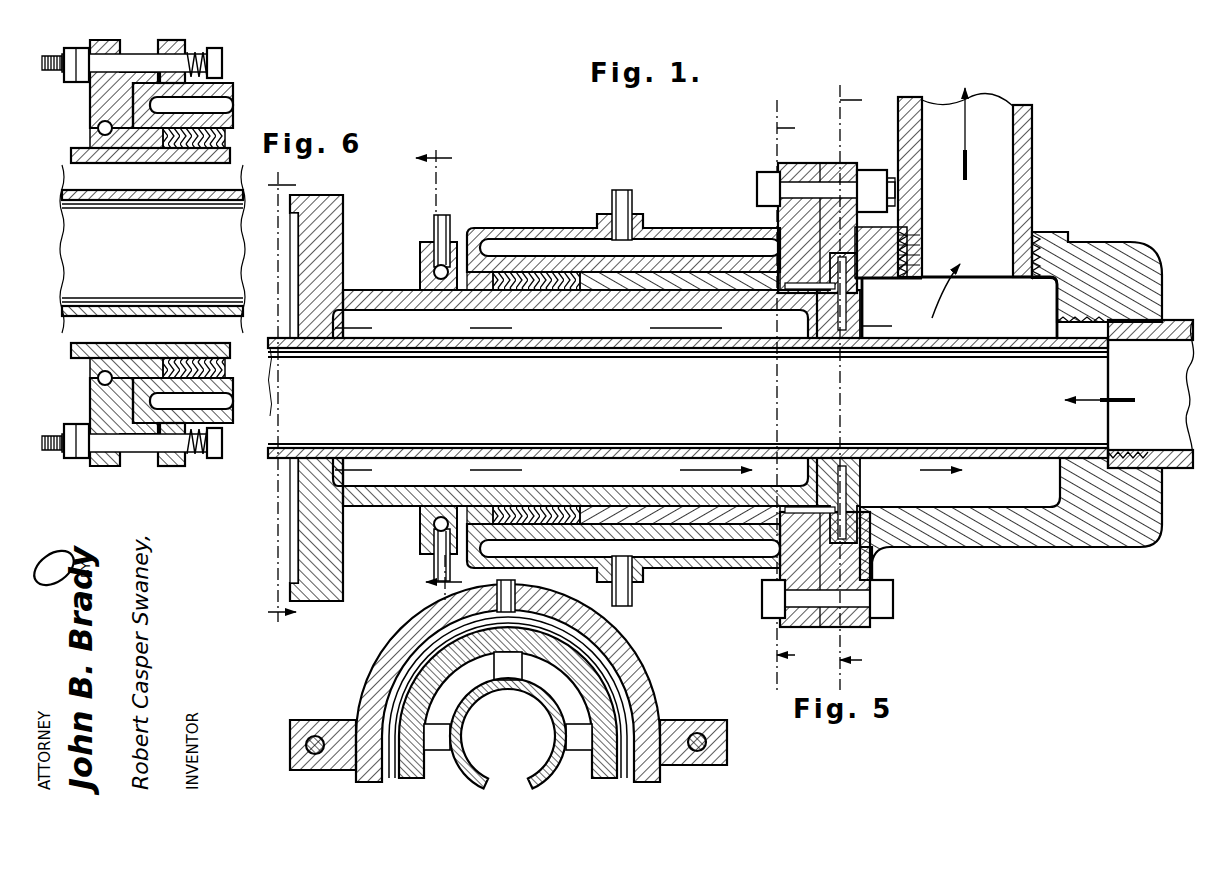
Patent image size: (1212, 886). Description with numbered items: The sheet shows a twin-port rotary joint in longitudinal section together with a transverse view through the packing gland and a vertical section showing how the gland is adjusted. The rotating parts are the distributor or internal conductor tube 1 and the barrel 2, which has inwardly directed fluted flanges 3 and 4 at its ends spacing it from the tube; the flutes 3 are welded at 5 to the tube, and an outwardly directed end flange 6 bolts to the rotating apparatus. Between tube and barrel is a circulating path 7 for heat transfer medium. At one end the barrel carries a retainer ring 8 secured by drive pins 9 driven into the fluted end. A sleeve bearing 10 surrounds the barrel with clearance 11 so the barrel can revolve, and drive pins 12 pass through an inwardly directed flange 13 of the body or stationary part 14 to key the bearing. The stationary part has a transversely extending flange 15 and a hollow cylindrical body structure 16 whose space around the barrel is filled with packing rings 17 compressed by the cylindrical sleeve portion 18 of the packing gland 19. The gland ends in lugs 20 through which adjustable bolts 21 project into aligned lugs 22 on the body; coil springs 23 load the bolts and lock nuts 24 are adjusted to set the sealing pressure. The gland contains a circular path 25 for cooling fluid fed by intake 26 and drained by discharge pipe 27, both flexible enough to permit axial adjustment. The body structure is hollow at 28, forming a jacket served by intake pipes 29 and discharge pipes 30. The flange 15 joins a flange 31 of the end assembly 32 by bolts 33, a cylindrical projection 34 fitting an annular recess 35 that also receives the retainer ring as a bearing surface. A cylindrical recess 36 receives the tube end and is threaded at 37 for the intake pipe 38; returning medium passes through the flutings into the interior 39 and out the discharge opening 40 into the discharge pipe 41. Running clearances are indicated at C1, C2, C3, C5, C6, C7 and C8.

In FIG. 1, the distributor or internal conductor tube 1 is at (650, 418).
In FIG. 6, the distributor or internal conductor tube 1 is at (118, 310).
In FIG. 5, the distributor or internal conductor tube 1 is at (515, 712).
In FIG. 1, the barrel 2 is at (360, 500).
In FIG. 6, the barrel 2 is at (70, 162).
In FIG. 5, the barrel 2 is at (560, 772).
In FIG. 1, the fluted flange 3 is at (295, 310).
In FIG. 6, the fluted flange 3 is at (165, 258).
In FIG. 5, the fluted flange 3 is at (525, 672).
In FIG. 1, the fluted flange 4 is at (880, 372).
In FIG. 1, the weld 5 is at (282, 492).
In FIG. 1, the end flange 6 is at (340, 245).
In FIG. 1, the circulating path 7 is at (705, 470).
In FIG. 5, the circulating path 7 is at (505, 690).
In FIG. 1, the retainer ring 8 is at (905, 255).
In FIG. 1, the drive pins 9 is at (868, 302).
In FIG. 1, the sleeve bearing 10 is at (710, 282).
In FIG. 1, the clearance 11 is at (670, 305).
In FIG. 1, the drive pins 12 is at (790, 260).
In FIG. 1, the inwardly directed flange 13 is at (790, 560).
In FIG. 1, the body or stationary part 14 is at (785, 220).
In FIG. 1, the transversely extending flange 15 is at (840, 600).
In FIG. 1, the hollow cylindrical body structure 16 is at (600, 228).
In FIG. 6, the hollow cylindrical body structure 16 is at (232, 118).
In FIG. 1, the packing rings 17 is at (540, 285).
In FIG. 6, the packing rings 17 is at (200, 360).
In FIG. 1, the cylindrical sleeve portion 18 is at (495, 300).
In FIG. 6, the cylindrical sleeve portion 18 is at (160, 150).
In FIG. 1, the packing gland 19 is at (420, 262).
In FIG. 6, the packing gland 19 is at (95, 132).
In FIG. 5, the packing gland 19 is at (620, 620).
In FIG. 6, the lugs 20 is at (95, 85).
In FIG. 5, the lugs 20 is at (695, 730).
In FIG. 6, the adjustable bolts 21 is at (128, 62).
In FIG. 5, the adjustable bolts 21 is at (295, 752).
In FIG. 6, the lugs 22 is at (172, 45).
In FIG. 6, the coil springs 23 is at (205, 56).
In FIG. 6, the lock nuts 24 is at (80, 52).
In FIG. 1, the circular path 25 is at (434, 280).
In FIG. 6, the circular path 25 is at (104, 138).
In FIG. 5, the circular path 25 is at (375, 690).
In FIG. 1, the intake 26 is at (445, 220).
In FIG. 5, the intake 26 is at (518, 592).
In FIG. 1, the discharge pipe 27 is at (432, 568).
In FIG. 1, the hollow jacket 28 is at (645, 248).
In FIG. 6, the hollow jacket 28 is at (228, 105).
In FIG. 1, the intake pipes 29 is at (635, 205).
In FIG. 1, the discharge pipes 30 is at (640, 590).
In FIG. 1, the flange 31 is at (870, 615).
In FIG. 1, the end assembly 32 is at (1015, 535).
In FIG. 1, the bolts 33 is at (915, 180).
In FIG. 1, the cylindrical projection 34 is at (810, 240).
In FIG. 1, the annular recess 35 is at (915, 250).
In FIG. 1, the cylindrical recess 36 is at (1080, 470).
In FIG. 1, the internal screw threads 37 is at (1128, 540).
In FIG. 1, the intake pipe 38 is at (1172, 262).
In FIG. 1, the interior 39 is at (990, 510).
In FIG. 1, the discharge opening 40 is at (1045, 250).
In FIG. 1, the discharge pipe 41 is at (1033, 145).
In FIG. 1, the running clearance C1 is at (1055, 345).
In FIG. 1, the running clearance C2 is at (935, 510).
In FIG. 1, the running clearance C3 is at (790, 585).
In FIG. 1, the running clearance C5 is at (655, 300).
In FIG. 1, the running clearance C6 is at (840, 495).
In FIG. 1, the running clearance C7 is at (560, 300).
In FIG. 1, the running clearance C8 is at (430, 300).
In FIG. 5, the running clearance C8 is at (395, 670).